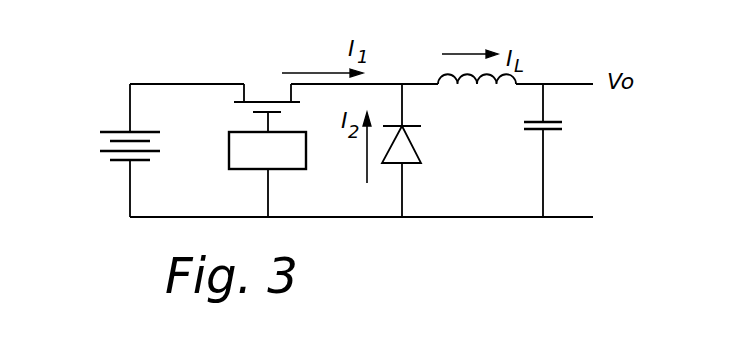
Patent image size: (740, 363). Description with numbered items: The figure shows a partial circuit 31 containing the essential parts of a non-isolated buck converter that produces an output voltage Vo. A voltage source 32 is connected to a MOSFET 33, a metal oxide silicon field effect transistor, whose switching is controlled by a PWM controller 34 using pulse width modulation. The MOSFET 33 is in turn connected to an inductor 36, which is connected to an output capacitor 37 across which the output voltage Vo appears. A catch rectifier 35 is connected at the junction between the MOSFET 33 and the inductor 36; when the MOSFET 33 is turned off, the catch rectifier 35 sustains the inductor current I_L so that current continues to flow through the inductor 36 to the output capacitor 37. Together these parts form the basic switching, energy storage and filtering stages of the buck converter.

The partial circuit 31 is at (175, 37).
The voltage source 32 is at (92, 131).
The MOSFET 33 is at (262, 82).
The PWM controller 34 is at (313, 153).
The catch rectifier 35 is at (424, 146).
The inductor 36 is at (427, 75).
The output capacitor 37 is at (568, 126).